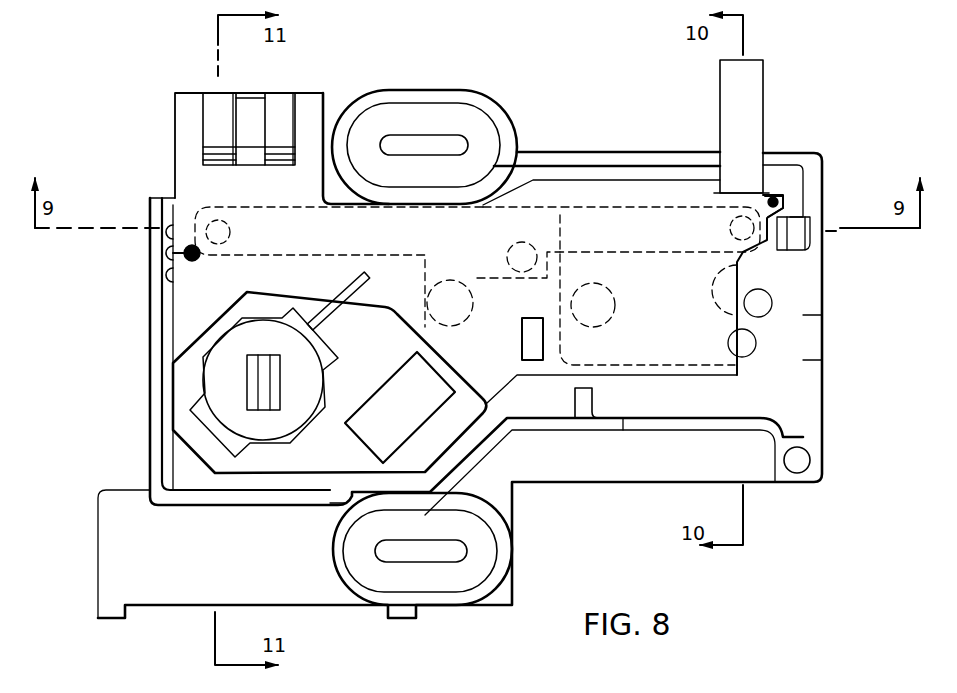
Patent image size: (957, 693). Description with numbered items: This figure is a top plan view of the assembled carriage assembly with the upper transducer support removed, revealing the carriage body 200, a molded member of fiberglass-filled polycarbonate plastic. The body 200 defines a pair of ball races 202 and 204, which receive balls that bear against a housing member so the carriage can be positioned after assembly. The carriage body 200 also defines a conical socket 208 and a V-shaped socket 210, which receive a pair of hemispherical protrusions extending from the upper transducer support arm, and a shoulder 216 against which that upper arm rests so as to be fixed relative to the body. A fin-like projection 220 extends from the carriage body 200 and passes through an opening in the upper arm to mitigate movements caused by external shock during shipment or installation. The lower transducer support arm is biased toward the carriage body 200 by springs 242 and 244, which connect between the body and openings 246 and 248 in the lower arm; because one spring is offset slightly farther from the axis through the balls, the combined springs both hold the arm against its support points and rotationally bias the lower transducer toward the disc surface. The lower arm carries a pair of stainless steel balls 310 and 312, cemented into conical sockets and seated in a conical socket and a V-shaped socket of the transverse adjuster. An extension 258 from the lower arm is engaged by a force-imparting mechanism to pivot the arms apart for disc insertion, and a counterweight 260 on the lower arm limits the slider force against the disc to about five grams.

The carriage body 200 is at (148, 397).
The ball race 202 is at (418, 122).
The ball race 204 is at (437, 572).
The conical socket 208 is at (810, 460).
The V-shaped socket 210 is at (808, 238).
The shoulder 216 is at (590, 431).
The fin-like projection 220 is at (697, 430).
The spring 242 is at (787, 201).
The spring 244 is at (172, 253).
The opening 246 is at (774, 198).
The opening 248 is at (201, 257).
The extension 258 is at (732, 80).
The counterweight 260 is at (223, 112).
The ball 310 is at (729, 229).
The ball 312 is at (236, 226).